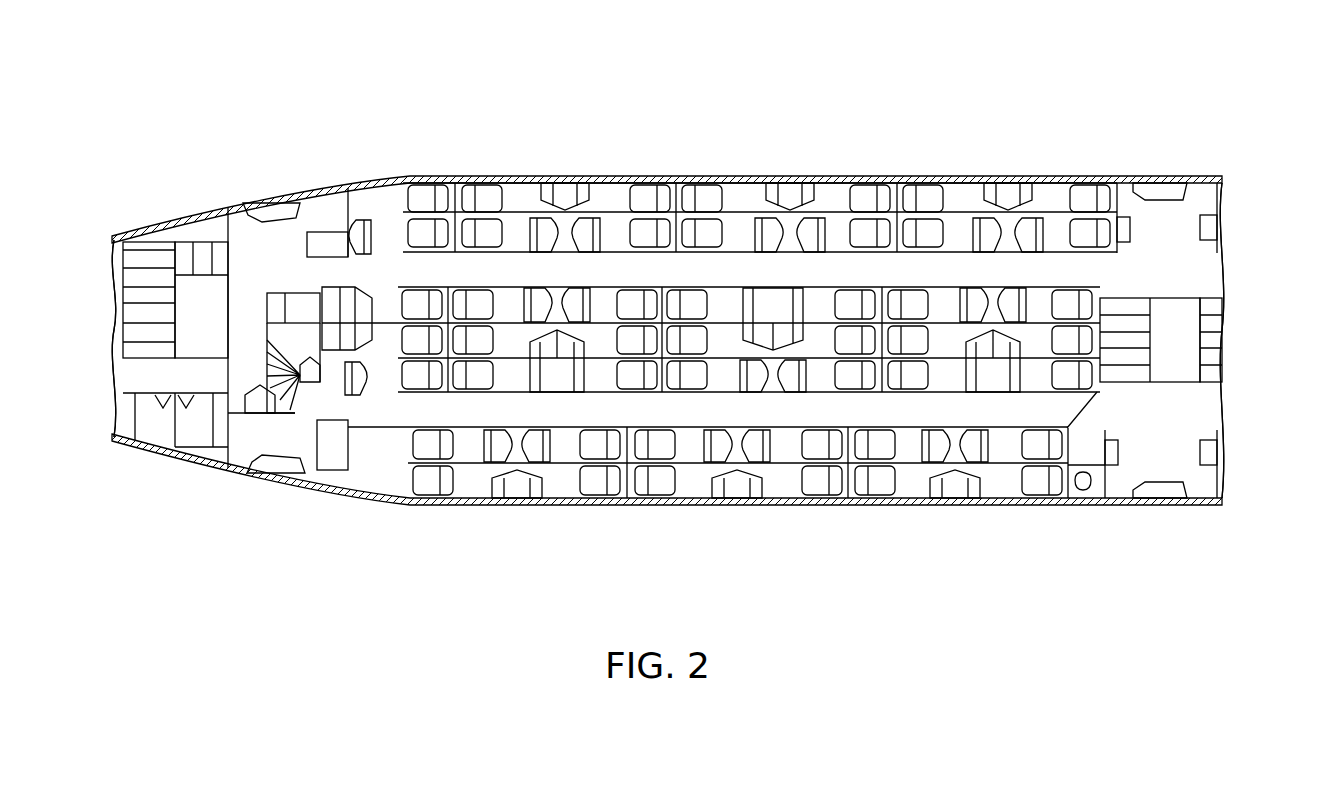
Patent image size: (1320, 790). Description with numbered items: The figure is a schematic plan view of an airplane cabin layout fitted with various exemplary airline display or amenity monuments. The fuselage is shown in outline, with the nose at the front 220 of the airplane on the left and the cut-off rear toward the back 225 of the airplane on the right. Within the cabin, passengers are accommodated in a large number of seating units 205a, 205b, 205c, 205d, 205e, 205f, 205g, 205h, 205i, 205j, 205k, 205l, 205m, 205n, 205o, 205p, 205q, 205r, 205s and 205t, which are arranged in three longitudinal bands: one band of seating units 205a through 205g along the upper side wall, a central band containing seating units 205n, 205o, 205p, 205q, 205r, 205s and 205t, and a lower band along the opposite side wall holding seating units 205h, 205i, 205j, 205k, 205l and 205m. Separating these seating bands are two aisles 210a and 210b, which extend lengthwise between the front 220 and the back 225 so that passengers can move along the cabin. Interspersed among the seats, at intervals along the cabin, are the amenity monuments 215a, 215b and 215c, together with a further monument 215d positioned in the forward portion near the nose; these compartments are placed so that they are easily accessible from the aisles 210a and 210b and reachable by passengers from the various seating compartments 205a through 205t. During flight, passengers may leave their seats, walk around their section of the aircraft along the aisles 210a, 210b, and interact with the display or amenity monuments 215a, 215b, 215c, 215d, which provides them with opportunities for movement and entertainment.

The seating unit 205a is at (420, 196).
The seating unit 205b is at (487, 196).
The seating unit 205c is at (646, 196).
The seating unit 205d is at (703, 196).
The seating unit 205e is at (866, 196).
The seating unit 205f is at (930, 196).
The seating unit 205g is at (1088, 196).
The seating unit 205h is at (437, 478).
The seating unit 205i is at (600, 478).
The seating unit 205j is at (660, 478).
The seating unit 205k is at (818, 478).
The seating unit 205l is at (885, 478).
The seating unit 205m is at (1035, 478).
The seating unit 205n is at (412, 340).
The seating unit 205o is at (488, 348).
The seating unit 205p is at (605, 340).
The seating unit 205q is at (710, 340).
The seating unit 205r is at (835, 340).
The seating unit 205s is at (928, 342).
The seating unit 205t is at (1065, 340).
The aisle 210a is at (627, 416).
The aisle 210b is at (765, 281).
The amenity monument 215a is at (988, 395).
The amenity monument 215b is at (781, 290).
The amenity monument 215c is at (557, 395).
The partition 215d is at (349, 303).
The front of the airplane 220 is at (110, 300).
The back of the airplane 225 is at (1232, 392).